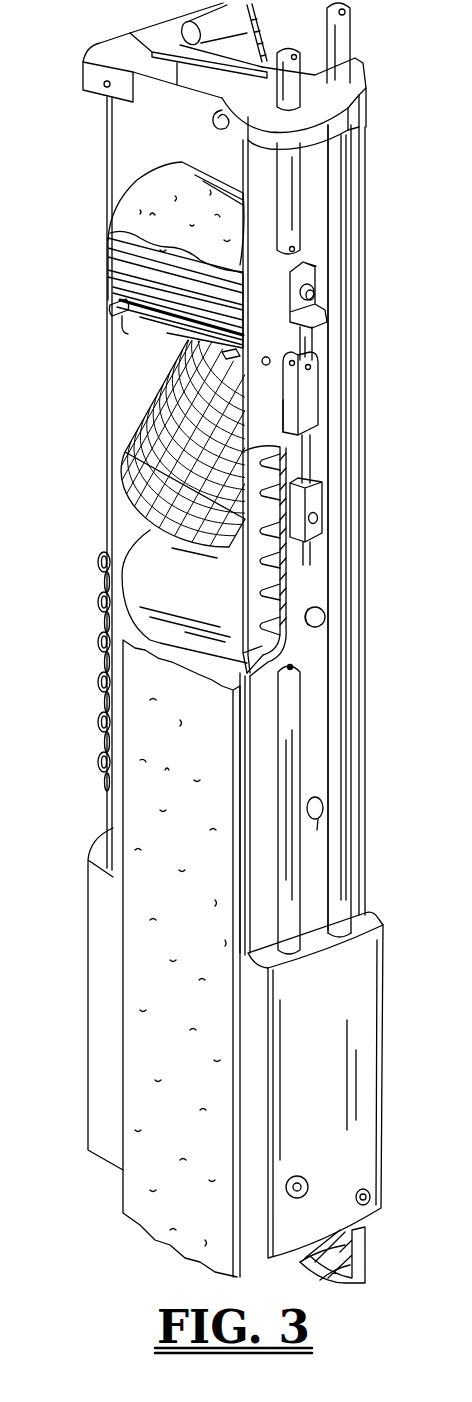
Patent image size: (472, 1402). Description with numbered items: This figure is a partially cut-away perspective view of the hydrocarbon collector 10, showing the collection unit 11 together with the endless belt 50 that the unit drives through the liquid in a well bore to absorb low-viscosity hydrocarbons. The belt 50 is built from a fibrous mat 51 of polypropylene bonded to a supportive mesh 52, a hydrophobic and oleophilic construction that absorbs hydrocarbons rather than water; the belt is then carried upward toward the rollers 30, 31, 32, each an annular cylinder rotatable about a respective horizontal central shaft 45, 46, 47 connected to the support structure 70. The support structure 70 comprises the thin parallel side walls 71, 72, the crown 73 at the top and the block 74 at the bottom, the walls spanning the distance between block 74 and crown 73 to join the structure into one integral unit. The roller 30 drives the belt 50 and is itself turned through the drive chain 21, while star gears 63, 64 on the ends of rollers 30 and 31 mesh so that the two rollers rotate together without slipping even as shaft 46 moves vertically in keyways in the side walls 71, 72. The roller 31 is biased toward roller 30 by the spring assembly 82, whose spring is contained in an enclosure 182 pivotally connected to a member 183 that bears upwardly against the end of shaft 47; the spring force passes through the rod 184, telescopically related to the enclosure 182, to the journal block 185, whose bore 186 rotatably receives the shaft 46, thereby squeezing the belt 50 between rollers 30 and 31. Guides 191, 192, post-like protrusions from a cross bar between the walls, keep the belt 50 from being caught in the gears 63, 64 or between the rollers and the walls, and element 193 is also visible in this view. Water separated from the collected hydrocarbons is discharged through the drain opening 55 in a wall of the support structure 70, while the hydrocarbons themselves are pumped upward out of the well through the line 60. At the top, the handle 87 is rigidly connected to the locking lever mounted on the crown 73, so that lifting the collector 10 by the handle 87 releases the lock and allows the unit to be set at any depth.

The hydrocarbon collector 10 is at (93, 195).
The collection unit 11 is at (83, 1168).
The drive chain 21 is at (98, 703).
The roller 30 is at (208, 595).
The roller 31 is at (242, 470).
The roller 32 is at (115, 265).
The central shaft 45 is at (323, 627).
The central shaft 46 is at (320, 519).
The central shaft 47 is at (300, 291).
The endless belt 50 is at (188, 942).
The fibrous mat 51 is at (190, 225).
The supportive mesh 52 is at (140, 425).
The drain opening 55 is at (313, 823).
The line 60 is at (293, 707).
The star gear 63 is at (276, 607).
The star gear 64 is at (263, 516).
The support structure 70 is at (360, 172).
The side wall 71 is at (150, 380).
The side wall 72 is at (318, 597).
The crown 73 is at (113, 50).
The block 74 is at (342, 1102).
The spring assembly 82 is at (278, 346).
The handle 87 is at (207, 18).
The enclosure 182 is at (290, 408).
The member 183 is at (314, 342).
The rod 184 is at (313, 453).
The journal block 185 is at (324, 492).
The bore 186 is at (309, 556).
The guide 191 is at (124, 330).
The guide 192 is at (238, 358).
The fitting 193 is at (115, 292).